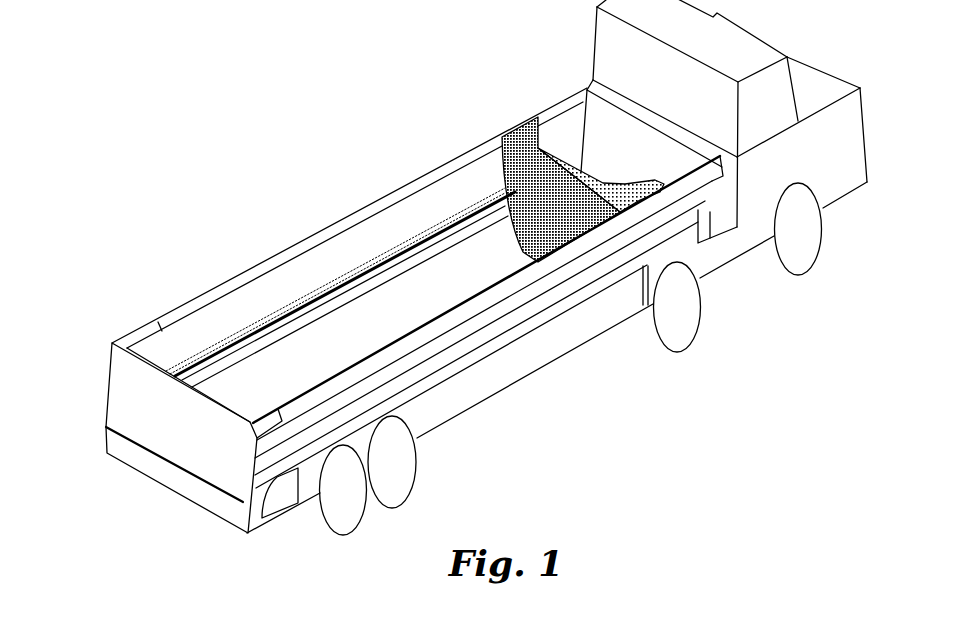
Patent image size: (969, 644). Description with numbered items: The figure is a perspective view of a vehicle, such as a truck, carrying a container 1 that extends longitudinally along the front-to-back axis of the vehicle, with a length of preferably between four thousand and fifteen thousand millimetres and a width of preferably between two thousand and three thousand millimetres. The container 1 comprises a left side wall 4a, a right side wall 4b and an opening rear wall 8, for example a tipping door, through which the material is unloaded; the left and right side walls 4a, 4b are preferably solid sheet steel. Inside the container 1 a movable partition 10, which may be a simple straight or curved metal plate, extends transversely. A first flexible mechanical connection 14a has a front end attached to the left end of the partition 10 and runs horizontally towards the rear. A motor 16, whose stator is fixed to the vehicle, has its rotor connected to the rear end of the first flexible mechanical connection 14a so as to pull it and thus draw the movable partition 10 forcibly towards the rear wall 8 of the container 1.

The container 1 is at (216, 188).
The left side wall 4a is at (367, 207).
The right side wall 4b is at (440, 347).
The opening rear wall 8 is at (125, 387).
The movable partition 10 is at (533, 232).
The first flexible mechanical connection 14a is at (474, 200).
The motor 16 is at (287, 493).